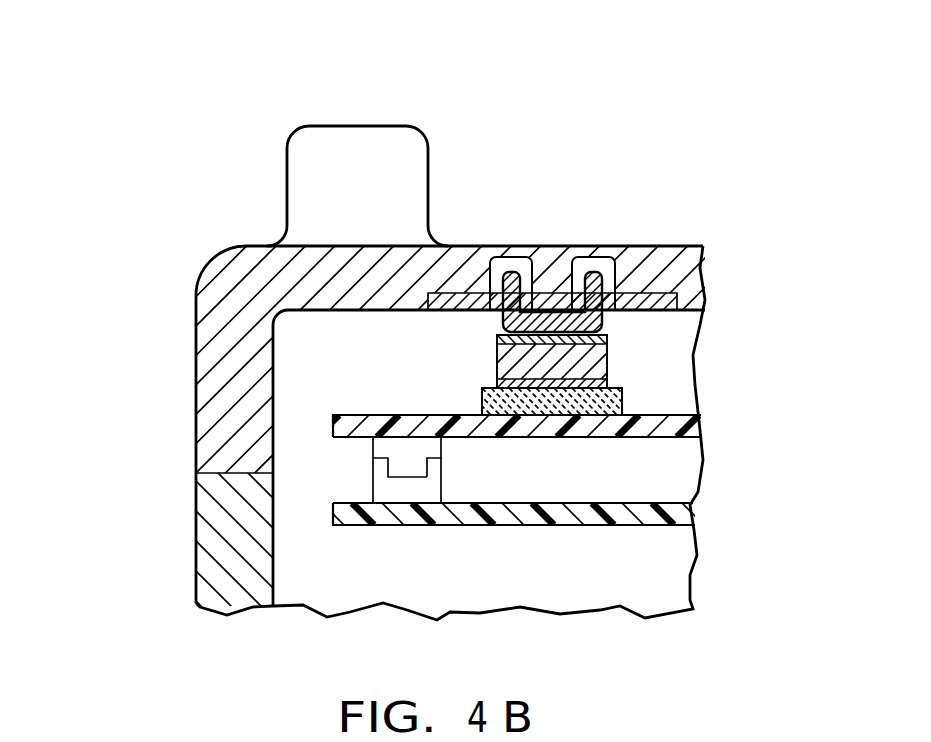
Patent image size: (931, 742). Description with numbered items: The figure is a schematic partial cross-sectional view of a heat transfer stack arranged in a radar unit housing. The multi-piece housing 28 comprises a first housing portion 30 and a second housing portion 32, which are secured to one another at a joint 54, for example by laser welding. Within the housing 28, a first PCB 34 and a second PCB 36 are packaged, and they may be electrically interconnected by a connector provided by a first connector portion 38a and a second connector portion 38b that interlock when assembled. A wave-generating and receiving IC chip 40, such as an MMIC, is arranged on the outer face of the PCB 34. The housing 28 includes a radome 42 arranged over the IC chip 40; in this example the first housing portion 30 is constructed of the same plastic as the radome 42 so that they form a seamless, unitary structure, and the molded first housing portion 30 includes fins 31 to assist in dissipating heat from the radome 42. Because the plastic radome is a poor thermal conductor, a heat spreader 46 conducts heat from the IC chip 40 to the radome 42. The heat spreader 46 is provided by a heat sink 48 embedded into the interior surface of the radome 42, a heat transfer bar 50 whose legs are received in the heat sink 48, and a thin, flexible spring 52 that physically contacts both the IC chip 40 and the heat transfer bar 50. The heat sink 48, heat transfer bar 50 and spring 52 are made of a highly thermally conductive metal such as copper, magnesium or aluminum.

The multi-piece housing 28 is at (203, 263).
The first housing portion 30 is at (213, 410).
The fins 31 is at (337, 148).
The second housing portion 32 is at (207, 573).
The first PCB 34 is at (665, 423).
The second PCB 36 is at (647, 515).
The first connector portion 38a is at (432, 447).
The second connector portion 38b is at (378, 480).
The IC chip 40 is at (487, 400).
The radome 42 is at (662, 258).
The heat spreader 46 is at (626, 358).
The heat sink 48 is at (492, 283).
The heat transfer bar 50 is at (538, 325).
The spring 52 is at (595, 358).
The joint 54 is at (217, 473).